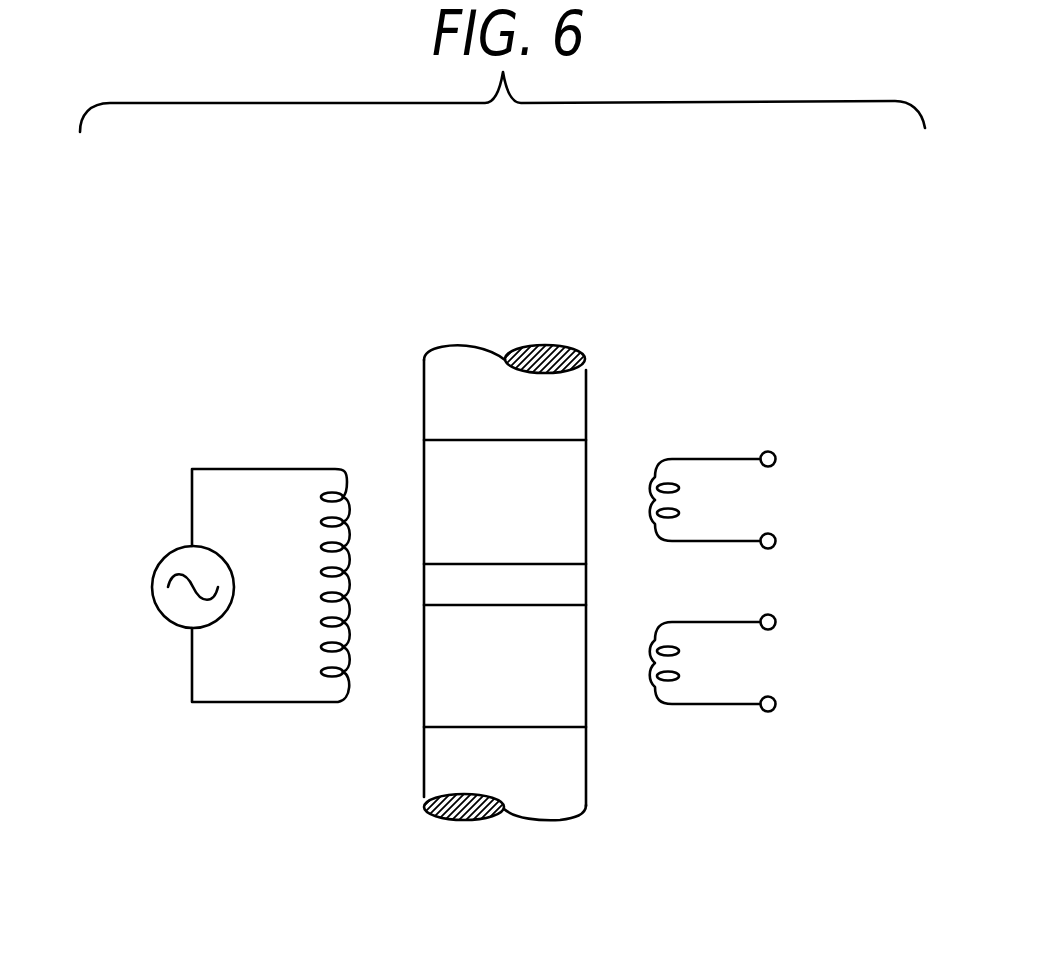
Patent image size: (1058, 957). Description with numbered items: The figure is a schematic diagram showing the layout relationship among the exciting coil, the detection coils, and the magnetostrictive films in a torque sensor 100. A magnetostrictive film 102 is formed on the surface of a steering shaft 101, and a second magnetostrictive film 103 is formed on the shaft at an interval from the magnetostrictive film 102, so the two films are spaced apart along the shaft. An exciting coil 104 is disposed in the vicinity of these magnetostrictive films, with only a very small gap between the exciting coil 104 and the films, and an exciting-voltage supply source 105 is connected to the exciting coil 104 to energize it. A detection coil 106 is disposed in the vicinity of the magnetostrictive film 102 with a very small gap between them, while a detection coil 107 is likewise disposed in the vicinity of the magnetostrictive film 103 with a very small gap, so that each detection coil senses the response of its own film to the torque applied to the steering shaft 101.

The torque sensor 100 is at (752, 258).
The steering shaft 101 is at (586, 374).
The magnetostrictive film 102 is at (588, 473).
The magnetostrictive film 103 is at (548, 715).
The exciting coil 104 is at (288, 468).
The exciting-voltage supply source 105 is at (152, 588).
The detection coil 106 is at (728, 458).
The detection coil 107 is at (740, 705).